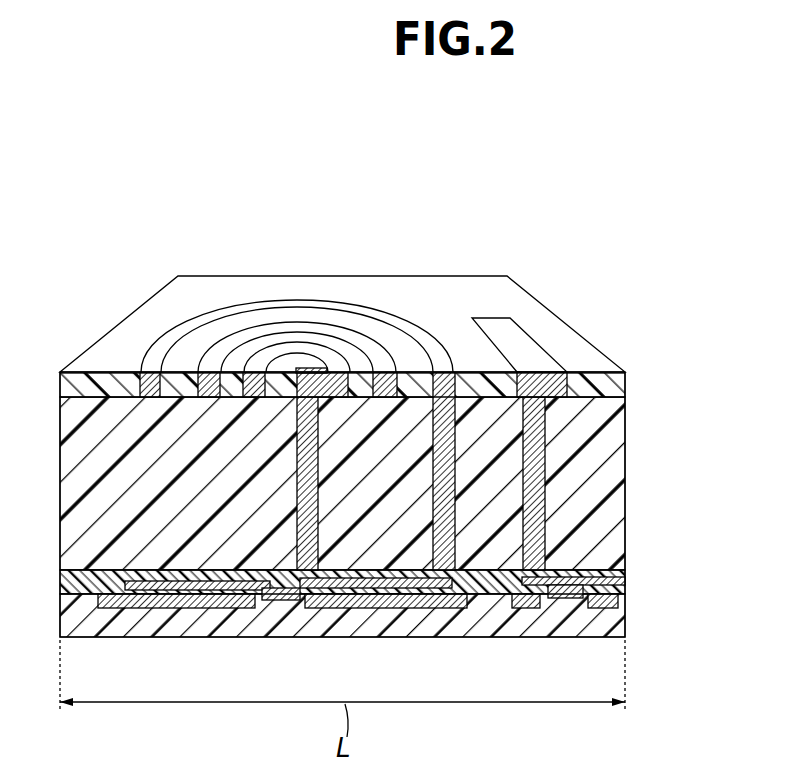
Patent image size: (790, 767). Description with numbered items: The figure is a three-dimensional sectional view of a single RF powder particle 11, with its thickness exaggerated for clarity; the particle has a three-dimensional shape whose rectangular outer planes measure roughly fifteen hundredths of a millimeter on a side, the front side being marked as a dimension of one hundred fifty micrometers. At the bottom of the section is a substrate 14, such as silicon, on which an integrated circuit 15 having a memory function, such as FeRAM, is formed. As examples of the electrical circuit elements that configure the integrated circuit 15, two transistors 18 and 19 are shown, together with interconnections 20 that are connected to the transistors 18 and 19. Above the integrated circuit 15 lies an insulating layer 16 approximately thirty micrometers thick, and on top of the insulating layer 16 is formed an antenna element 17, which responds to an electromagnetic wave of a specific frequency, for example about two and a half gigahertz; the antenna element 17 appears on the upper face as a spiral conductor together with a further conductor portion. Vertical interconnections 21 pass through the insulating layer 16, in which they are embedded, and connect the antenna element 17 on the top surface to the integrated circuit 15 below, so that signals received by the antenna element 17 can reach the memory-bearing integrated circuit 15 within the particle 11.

The RF powder particle 11 is at (403, 230).
The substrate 14 is at (625, 616).
The integrated circuit 15 is at (625, 580).
The insulating layer 16 is at (625, 480).
The antenna element 17 is at (367, 304).
The transistor 18 is at (270, 637).
The transistor 19 is at (583, 637).
The interconnections 20 is at (172, 637).
The interconnections 21 is at (318, 416).